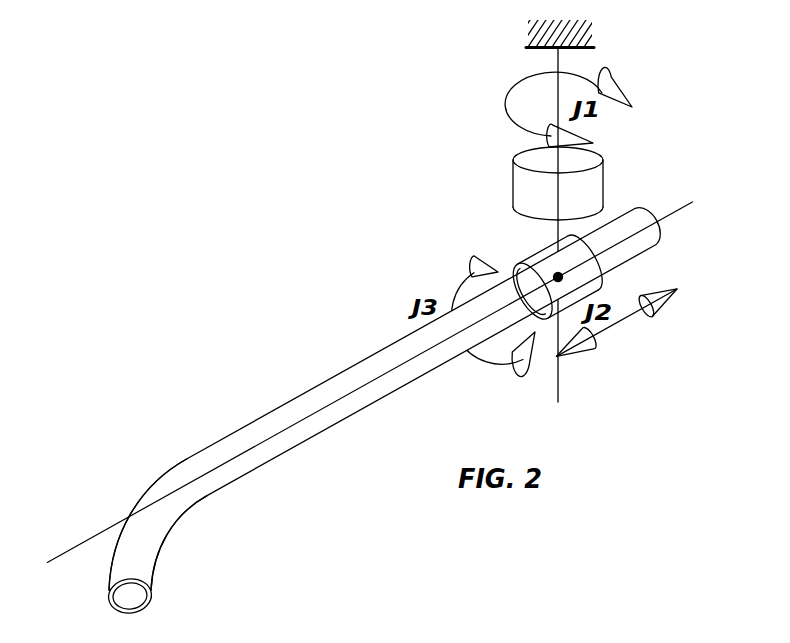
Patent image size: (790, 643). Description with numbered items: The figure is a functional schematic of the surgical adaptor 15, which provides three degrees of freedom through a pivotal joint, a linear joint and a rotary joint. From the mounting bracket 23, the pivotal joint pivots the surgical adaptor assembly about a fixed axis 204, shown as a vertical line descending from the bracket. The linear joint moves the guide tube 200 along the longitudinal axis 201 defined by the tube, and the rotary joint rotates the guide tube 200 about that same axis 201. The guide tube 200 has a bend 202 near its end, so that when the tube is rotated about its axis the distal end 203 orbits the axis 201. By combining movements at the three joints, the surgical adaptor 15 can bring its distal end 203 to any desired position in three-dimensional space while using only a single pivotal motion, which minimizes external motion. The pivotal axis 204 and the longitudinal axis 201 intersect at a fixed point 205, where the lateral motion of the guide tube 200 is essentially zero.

The surgical adaptor 15 is at (369, 418).
The mounting bracket 23 is at (537, 35).
The guide tube 200 is at (370, 402).
The longitudinal axis 201 is at (332, 403).
The bend 202 is at (163, 527).
The distal end 203 is at (152, 600).
The fixed axis 204 is at (558, 382).
The fixed point 205 is at (555, 273).